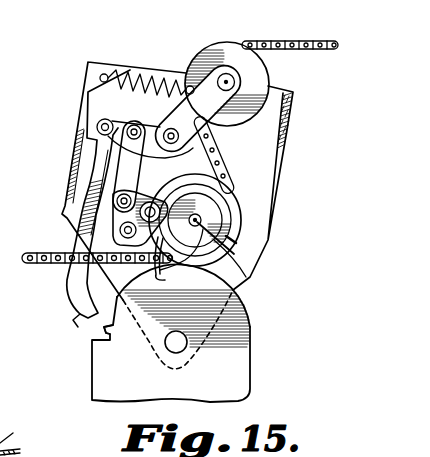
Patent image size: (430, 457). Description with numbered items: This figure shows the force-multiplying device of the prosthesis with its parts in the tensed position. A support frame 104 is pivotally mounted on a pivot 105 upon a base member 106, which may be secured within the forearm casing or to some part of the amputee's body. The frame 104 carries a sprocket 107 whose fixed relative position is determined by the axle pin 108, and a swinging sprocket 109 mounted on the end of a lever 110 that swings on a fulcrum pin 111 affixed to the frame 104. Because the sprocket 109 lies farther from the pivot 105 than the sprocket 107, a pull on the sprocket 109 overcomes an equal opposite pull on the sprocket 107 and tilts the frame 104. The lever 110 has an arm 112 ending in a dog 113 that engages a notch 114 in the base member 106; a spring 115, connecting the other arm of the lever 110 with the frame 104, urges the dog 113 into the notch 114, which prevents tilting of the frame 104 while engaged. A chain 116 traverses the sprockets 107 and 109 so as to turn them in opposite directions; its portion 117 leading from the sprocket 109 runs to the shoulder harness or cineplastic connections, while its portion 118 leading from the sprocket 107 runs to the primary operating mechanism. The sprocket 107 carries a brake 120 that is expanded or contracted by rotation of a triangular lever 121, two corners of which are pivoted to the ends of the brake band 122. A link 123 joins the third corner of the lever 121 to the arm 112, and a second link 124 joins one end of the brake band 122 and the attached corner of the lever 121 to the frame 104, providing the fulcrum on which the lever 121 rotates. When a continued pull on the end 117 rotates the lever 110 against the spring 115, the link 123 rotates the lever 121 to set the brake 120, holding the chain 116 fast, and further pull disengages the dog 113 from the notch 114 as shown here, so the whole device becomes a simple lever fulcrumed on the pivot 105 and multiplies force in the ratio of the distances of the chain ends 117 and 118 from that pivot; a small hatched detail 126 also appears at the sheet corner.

The support frame 104 is at (281, 150).
The pivot 105 is at (182, 348).
The base member 106 is at (199, 329).
The sprocket 107 is at (236, 218).
The axle pin 108 is at (184, 291).
The swinging sprocket 109 is at (229, 49).
The lever 110 is at (213, 116).
The fulcrum pin 111 is at (165, 130).
The arm 112 is at (85, 238).
The dog 113 is at (82, 326).
The notch 114 is at (108, 339).
The spring 115 is at (146, 75).
The chain 116 is at (226, 162).
The portion of the chain 117 is at (309, 41).
The portion of the chain 118 is at (41, 266).
The brake 120 is at (238, 241).
The triangular lever 121 is at (99, 217).
The brake band 122 is at (160, 272).
The link 123 is at (118, 167).
The second link 124 is at (144, 187).
The element 126 is at (20, 440).